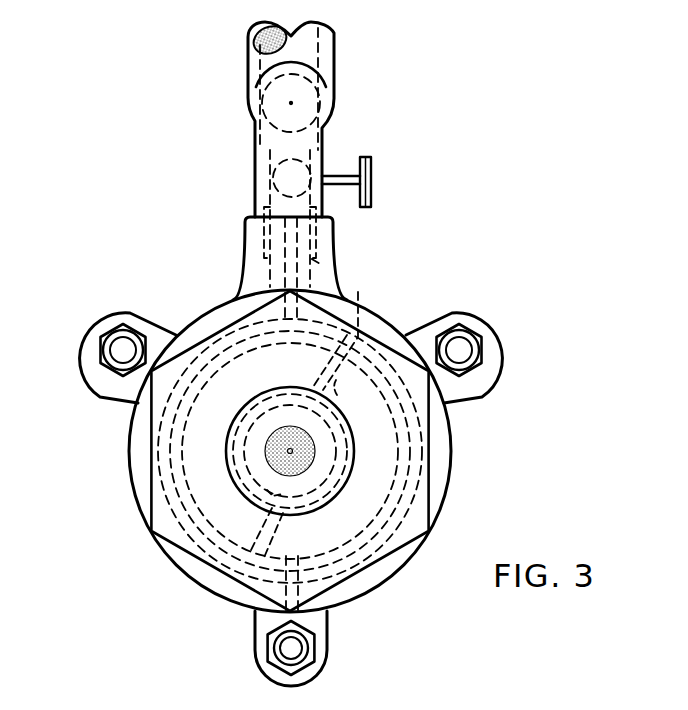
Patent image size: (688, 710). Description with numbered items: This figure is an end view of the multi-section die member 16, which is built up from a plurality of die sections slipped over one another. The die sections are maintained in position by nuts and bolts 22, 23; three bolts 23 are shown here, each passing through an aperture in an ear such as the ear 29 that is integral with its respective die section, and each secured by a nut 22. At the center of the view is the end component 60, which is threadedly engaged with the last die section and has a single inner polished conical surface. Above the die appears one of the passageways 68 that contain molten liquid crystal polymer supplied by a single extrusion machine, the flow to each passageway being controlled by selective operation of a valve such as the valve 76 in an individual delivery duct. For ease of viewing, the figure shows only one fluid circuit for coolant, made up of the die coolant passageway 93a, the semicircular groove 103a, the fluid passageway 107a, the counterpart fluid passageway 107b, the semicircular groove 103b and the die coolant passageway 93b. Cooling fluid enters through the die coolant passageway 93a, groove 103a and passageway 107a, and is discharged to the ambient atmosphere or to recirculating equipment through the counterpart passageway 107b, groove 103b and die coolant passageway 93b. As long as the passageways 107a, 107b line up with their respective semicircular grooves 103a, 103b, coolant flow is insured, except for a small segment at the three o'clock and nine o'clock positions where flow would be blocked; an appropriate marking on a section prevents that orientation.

The multi-section die member 16 is at (402, 638).
The nuts 22 is at (104, 340).
The bolts 23 is at (123, 348).
The ear 29 is at (113, 385).
The end component 60 is at (151, 459).
The passageway 68 is at (262, 187).
The valve 76 is at (325, 172).
The die coolant passageway 93a is at (370, 587).
The die coolant passageway 93b is at (322, 265).
The semicircular groove 103a is at (185, 565).
The semicircular groove 103b is at (364, 331).
The fluid passageway 107a is at (273, 539).
The fluid passageway 107b is at (363, 391).